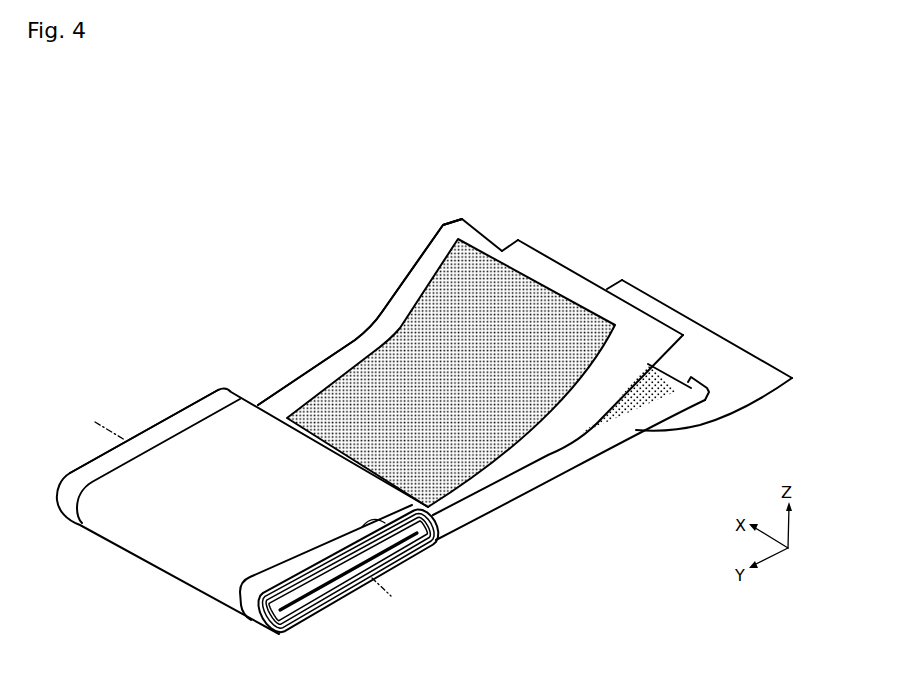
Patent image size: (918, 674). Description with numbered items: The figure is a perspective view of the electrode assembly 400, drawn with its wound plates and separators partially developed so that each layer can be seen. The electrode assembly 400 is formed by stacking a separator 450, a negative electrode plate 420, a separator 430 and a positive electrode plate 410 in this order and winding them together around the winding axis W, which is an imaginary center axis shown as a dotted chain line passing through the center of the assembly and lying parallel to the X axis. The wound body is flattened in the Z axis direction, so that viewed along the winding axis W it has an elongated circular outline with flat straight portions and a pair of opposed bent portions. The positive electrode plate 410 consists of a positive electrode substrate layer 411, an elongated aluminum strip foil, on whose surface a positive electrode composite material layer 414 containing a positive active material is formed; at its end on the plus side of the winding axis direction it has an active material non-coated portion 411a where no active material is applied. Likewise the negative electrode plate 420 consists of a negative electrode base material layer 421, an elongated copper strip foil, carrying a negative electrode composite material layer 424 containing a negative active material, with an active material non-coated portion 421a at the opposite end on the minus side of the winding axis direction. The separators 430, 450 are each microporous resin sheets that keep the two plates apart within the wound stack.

The electrode assembly 400 is at (668, 163).
The positive electrode plate 410 is at (436, 363).
The positive electrode substrate layer 411 is at (397, 284).
The active material non-coated portion 411a is at (461, 229).
The positive electrode composite material layer 414 is at (398, 340).
The negative electrode plate 420 is at (571, 452).
The negative electrode base material layer 421 is at (625, 431).
The active material non-coated portion 421a is at (698, 383).
The negative electrode composite material layer 424 is at (629, 432).
The separator 430 is at (542, 259).
The separator 450 is at (175, 560).
The winding axis W is at (392, 596).